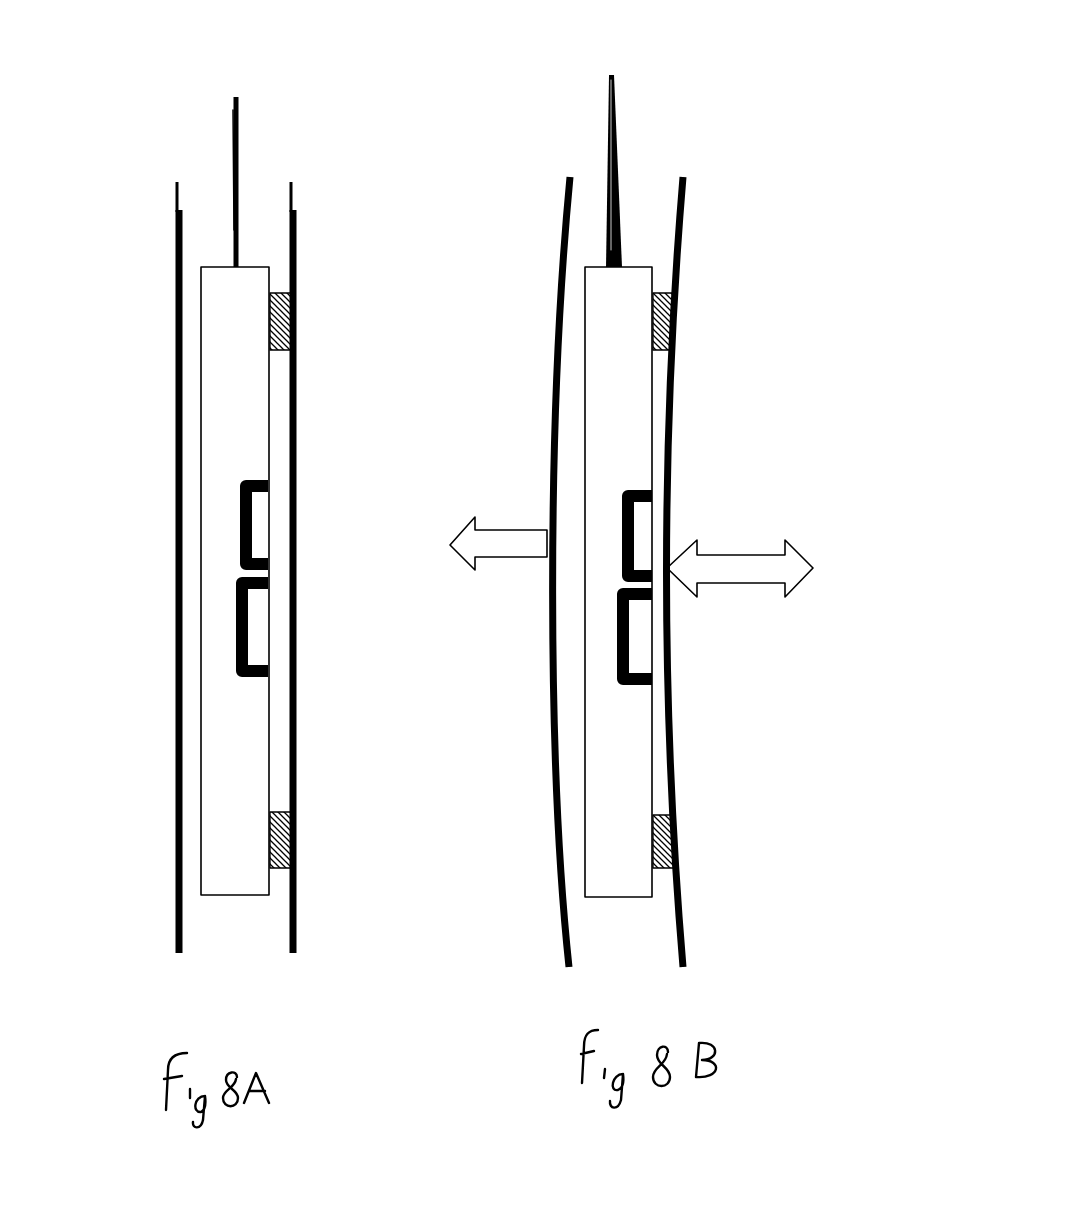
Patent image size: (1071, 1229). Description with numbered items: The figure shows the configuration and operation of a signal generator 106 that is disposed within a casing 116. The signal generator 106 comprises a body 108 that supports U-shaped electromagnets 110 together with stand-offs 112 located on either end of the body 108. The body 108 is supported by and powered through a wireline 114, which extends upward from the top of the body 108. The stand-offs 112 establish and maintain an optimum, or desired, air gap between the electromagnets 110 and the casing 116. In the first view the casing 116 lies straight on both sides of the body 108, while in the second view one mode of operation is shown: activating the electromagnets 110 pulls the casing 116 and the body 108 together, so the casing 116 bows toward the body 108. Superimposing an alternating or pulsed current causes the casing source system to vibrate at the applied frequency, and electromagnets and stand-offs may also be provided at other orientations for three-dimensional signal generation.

In FIG. 8A, the signal generator 106 is at (318, 461).
In FIG. 8B, the signal generator 106 is at (720, 465).
In FIG. 8A, the body 108 is at (240, 417).
In FIG. 8B, the body 108 is at (627, 308).
In FIG. 8A, the U-shaped electromagnets 110 is at (317, 574).
In FIG. 8B, the U-shaped electromagnets 110 is at (716, 577).
In FIG. 8A, the stand-offs 112 is at (408, 278).
In FIG. 8B, the stand-offs 112 is at (678, 838).
In FIG. 8A, the wireline 114 is at (238, 138).
In FIG. 8B, the wireline 114 is at (618, 123).
In FIG. 8A, the casing 116 is at (173, 366).
In FIG. 8B, the casing 116 is at (670, 447).